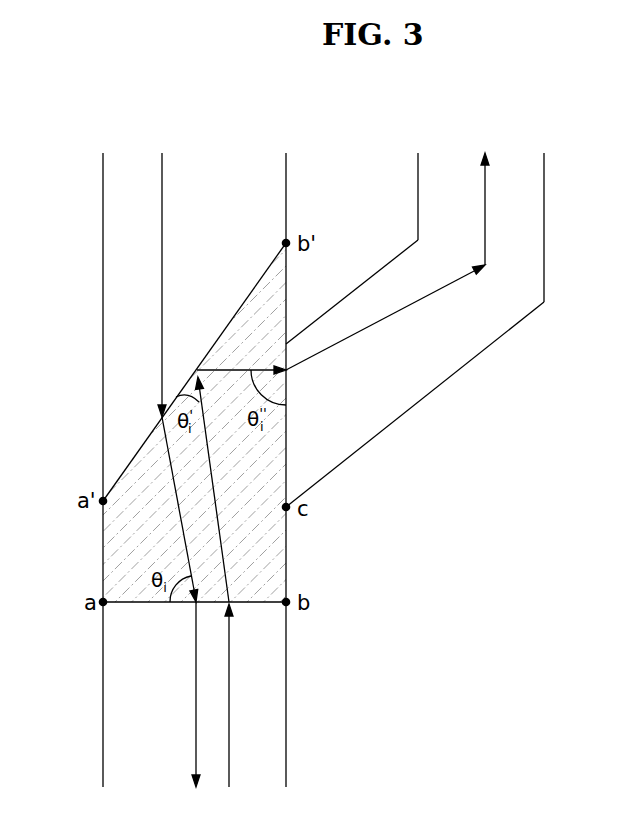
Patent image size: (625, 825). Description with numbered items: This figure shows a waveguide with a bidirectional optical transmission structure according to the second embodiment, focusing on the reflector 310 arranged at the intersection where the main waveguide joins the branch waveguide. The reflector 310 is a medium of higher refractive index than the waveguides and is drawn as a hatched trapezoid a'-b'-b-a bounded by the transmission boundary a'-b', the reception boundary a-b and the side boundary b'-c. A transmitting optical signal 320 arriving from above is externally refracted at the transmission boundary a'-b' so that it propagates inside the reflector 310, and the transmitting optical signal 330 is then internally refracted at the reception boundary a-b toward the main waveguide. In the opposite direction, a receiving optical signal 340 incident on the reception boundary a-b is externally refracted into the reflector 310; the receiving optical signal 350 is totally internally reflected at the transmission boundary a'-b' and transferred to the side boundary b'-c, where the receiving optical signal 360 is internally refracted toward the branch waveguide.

The reflector 310 is at (118, 542).
The transmitting optical signal 320 is at (162, 209).
The transmitting optical signal 330 is at (168, 470).
The receiving optical signal 340 is at (229, 698).
The receiving optical signal 350 is at (223, 544).
The receiving optical signal 360 is at (214, 344).